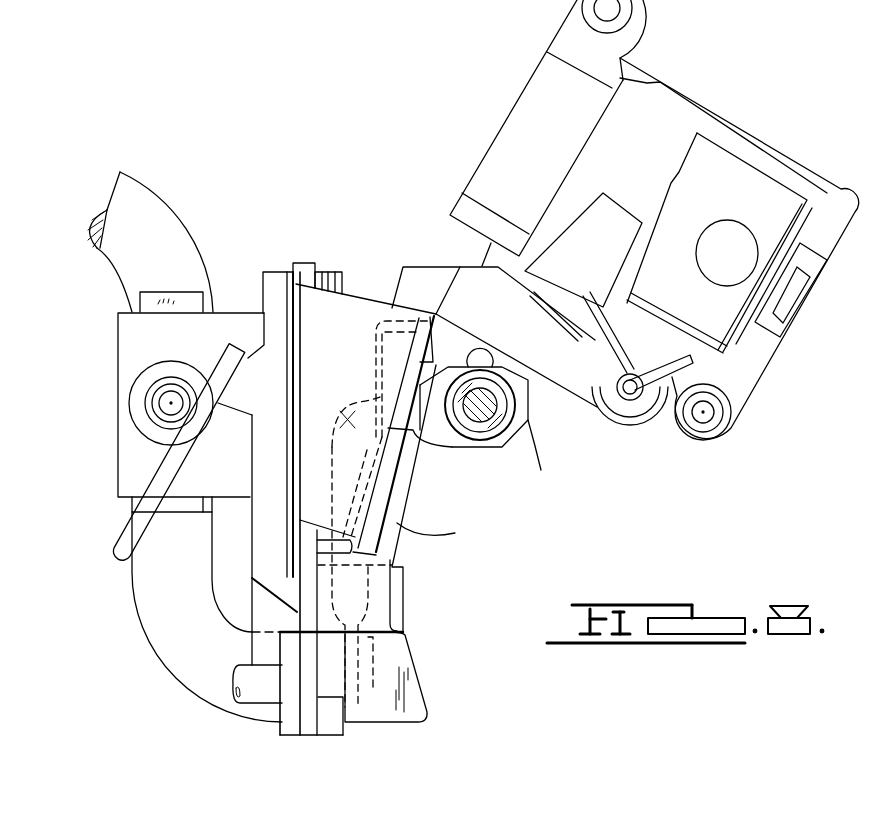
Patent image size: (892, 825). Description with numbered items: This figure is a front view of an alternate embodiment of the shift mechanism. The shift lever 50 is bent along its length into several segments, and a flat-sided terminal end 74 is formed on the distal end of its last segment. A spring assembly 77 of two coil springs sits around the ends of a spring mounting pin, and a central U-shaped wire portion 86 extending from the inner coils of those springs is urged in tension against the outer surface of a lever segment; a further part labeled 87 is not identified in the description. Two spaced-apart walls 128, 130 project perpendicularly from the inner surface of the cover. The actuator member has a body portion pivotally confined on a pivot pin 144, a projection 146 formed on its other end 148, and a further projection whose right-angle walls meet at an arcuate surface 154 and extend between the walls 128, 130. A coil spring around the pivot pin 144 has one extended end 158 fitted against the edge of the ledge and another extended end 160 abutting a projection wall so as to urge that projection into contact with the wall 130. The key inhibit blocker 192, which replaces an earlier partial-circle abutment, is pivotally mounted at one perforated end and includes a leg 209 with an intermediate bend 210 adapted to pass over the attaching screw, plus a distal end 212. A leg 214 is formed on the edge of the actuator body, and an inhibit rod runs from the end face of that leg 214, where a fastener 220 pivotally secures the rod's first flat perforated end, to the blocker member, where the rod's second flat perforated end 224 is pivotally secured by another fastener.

The shift lever 50 is at (153, 192).
The spring assembly 77 is at (128, 440).
The lug 87 is at (231, 348).
The central U-shaped wire portion 86 is at (119, 532).
The distal end 212 is at (375, 328).
The intermediate bend 210 is at (347, 539).
The other end 148 is at (394, 272).
The projection 146 is at (440, 321).
The arcuate surface 154 is at (603, 194).
The wall 128 is at (570, 167).
The wall 130 is at (663, 193).
The extended end 158 is at (667, 352).
The other extended end 160 is at (590, 353).
The fastener 220 is at (492, 418).
The leg 214 is at (513, 452).
The pivot pin 144 is at (632, 396).
The key inhibit blocker 192 is at (416, 489).
The leg 209 is at (396, 541).
The flat-sided terminal end 74 is at (423, 693).
The second flat perforated end 224 is at (357, 710).